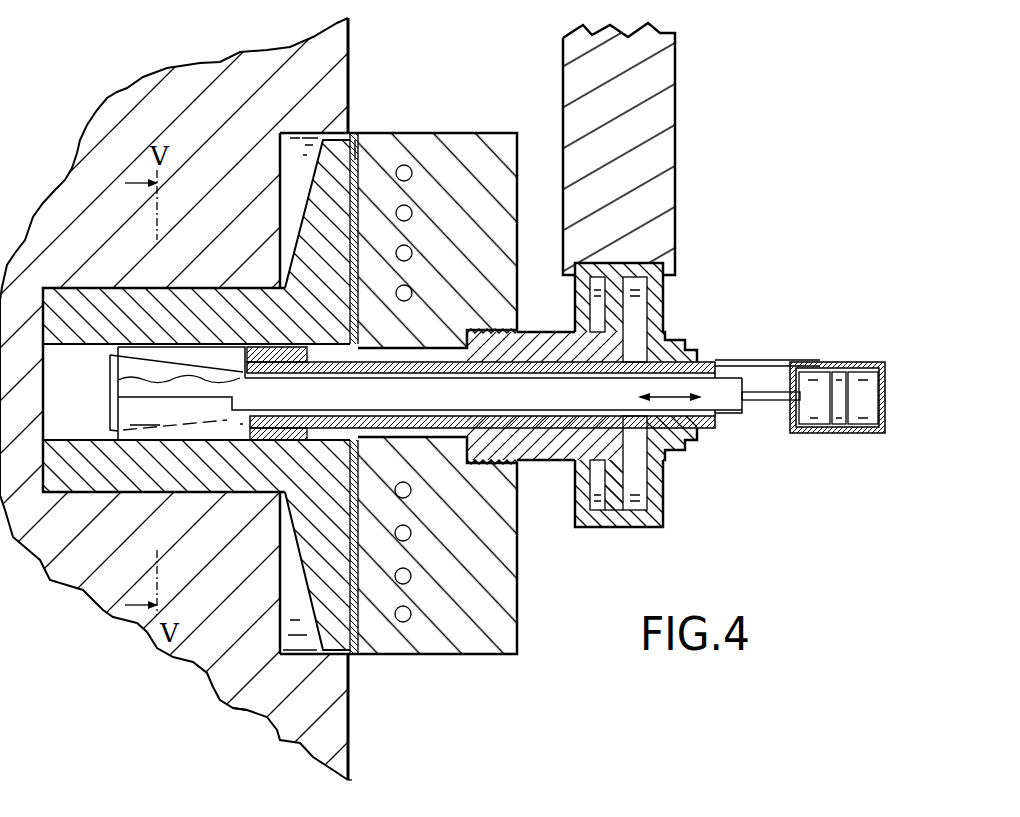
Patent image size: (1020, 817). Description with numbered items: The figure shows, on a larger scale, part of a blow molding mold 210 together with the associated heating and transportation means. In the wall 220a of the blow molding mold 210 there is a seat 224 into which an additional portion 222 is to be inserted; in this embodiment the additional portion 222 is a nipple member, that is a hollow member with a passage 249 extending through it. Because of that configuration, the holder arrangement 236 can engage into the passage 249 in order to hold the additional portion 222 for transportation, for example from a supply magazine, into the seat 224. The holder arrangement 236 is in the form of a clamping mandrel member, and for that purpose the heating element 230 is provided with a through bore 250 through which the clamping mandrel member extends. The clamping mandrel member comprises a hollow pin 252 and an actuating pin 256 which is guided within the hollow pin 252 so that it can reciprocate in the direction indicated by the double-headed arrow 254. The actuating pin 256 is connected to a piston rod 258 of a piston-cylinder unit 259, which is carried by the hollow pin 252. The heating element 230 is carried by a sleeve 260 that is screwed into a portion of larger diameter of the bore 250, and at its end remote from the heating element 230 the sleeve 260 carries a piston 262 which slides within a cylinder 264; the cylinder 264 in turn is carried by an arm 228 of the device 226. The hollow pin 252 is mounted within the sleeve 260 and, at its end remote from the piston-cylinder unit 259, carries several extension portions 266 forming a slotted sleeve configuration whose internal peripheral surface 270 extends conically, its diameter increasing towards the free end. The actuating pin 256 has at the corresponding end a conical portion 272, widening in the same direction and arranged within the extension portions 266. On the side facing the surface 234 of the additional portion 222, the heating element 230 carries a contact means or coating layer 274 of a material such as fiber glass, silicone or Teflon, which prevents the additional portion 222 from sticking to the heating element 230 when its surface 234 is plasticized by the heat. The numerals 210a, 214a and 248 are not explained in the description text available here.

The blow molding mold 210 is at (125, 683).
The outer surface of holder 210a is at (137, 108).
The bottom surface 214a is at (505, 780).
The wall 220a is at (352, 30).
The additional portion 222 is at (352, 158).
The seat 224 is at (293, 140).
The device 226 is at (729, 257).
The arm 228 is at (657, 115).
The heating element 230 is at (483, 640).
The surface 234 is at (270, 713).
The holder arrangement 236 is at (98, 404).
The mounting block 248 is at (411, 168).
The passage 249 is at (88, 427).
The through bore 250 is at (442, 437).
The hollow pin 252 is at (710, 358).
The double-headed arrow 254 is at (685, 430).
The actuating pin 256 is at (738, 415).
The piston rod 258 is at (777, 402).
The piston-cylinder unit 259 is at (862, 362).
The sleeve 260 is at (540, 336).
The piston 262 is at (628, 500).
The cylinder 264 is at (658, 505).
The extension portions 266 is at (236, 347).
The internal peripheral surface 270 is at (170, 358).
The conical portion 272 is at (188, 412).
The contact means or coating layer 274 is at (360, 160).